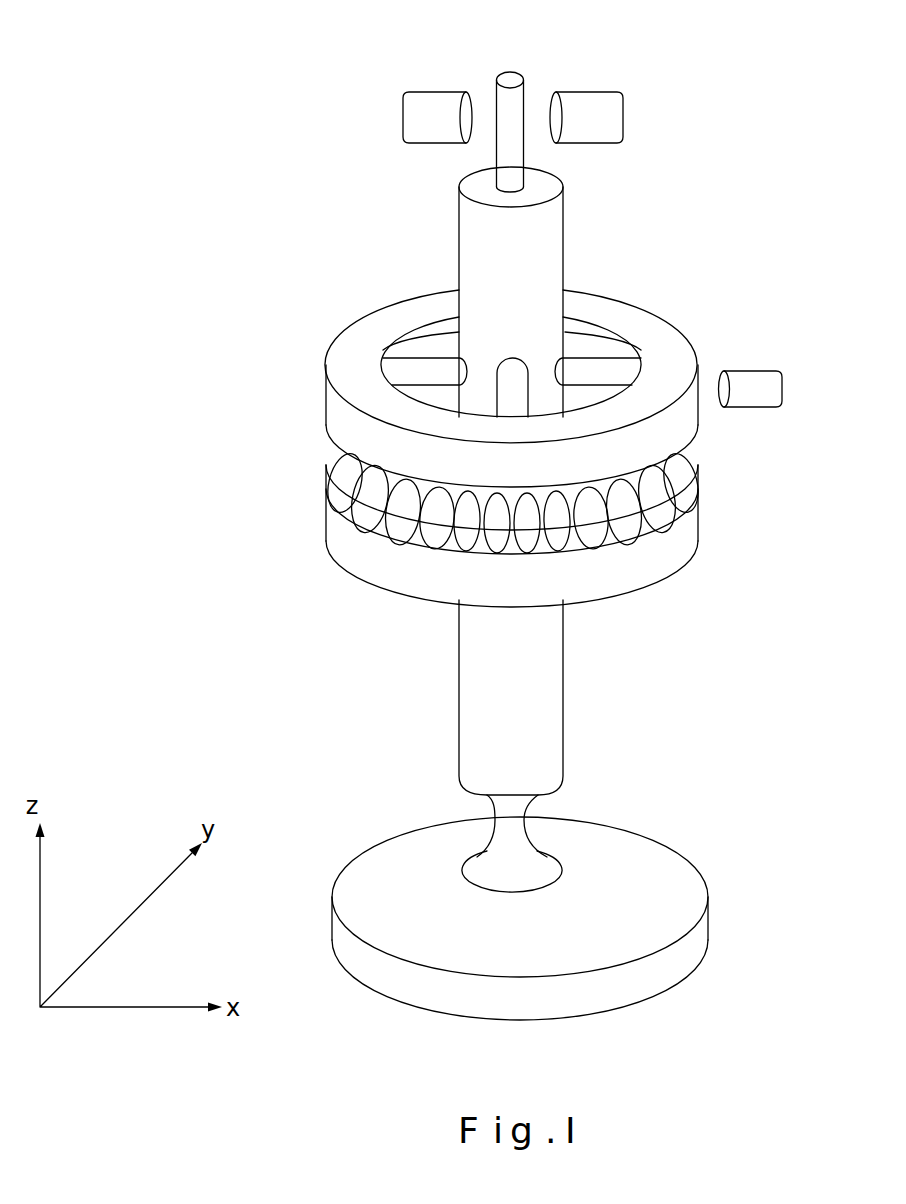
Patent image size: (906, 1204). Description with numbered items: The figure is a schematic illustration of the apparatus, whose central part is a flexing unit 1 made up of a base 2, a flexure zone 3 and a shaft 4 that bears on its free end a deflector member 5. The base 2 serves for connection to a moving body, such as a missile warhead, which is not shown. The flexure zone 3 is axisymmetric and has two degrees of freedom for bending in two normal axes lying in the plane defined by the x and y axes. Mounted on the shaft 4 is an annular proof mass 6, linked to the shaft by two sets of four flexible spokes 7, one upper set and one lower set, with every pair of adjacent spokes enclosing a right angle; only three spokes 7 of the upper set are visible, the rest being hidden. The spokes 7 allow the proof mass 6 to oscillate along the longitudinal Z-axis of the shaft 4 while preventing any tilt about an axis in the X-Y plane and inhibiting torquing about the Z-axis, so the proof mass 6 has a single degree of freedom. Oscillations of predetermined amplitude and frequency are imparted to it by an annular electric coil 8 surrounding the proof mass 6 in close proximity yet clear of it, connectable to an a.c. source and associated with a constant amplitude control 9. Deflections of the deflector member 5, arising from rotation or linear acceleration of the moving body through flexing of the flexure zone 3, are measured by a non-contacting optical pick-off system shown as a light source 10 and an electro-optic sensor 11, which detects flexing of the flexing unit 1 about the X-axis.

The flexing unit 1 is at (592, 783).
The base 2 is at (600, 845).
The flexure zone 3 is at (511, 838).
The shaft 4 is at (470, 686).
The deflector member 5 is at (508, 95).
The annular proof mass 6 is at (607, 312).
The flexible spokes 7 is at (437, 370).
The annular electric coil 8 is at (677, 500).
The constant amplitude control 9 is at (748, 395).
The light source 10 is at (594, 106).
The electro-optic sensor 11 is at (445, 107).